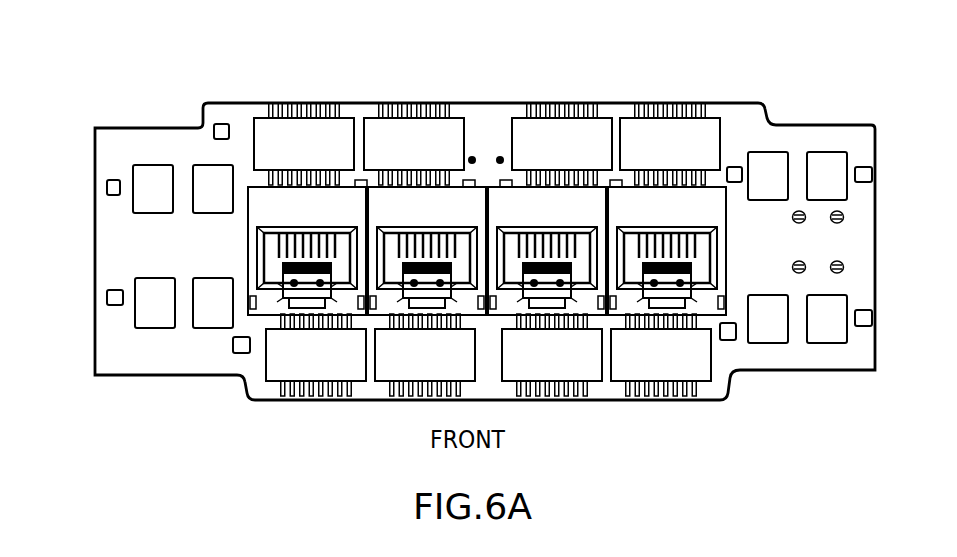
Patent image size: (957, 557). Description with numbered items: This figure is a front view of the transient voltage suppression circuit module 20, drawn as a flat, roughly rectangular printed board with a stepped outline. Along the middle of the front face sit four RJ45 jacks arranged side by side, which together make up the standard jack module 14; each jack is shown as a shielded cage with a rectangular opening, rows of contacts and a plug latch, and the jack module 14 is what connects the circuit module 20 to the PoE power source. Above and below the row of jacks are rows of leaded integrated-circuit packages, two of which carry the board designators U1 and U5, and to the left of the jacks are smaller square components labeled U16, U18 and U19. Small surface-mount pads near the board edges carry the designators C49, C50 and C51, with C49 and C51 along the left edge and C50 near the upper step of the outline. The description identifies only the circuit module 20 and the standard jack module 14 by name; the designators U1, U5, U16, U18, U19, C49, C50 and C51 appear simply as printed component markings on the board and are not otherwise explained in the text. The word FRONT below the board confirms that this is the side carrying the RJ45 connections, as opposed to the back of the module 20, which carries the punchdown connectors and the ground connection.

The transient voltage suppression circuit module 20 is at (95, 227).
The standard jack module 14 is at (672, 288).
The capacitor C49 is at (114, 180).
The capacitor C50 is at (222, 124).
The capacitor C51 is at (112, 305).
The integrated circuit U1 is at (304, 144).
The integrated circuit U5 is at (316, 355).
The integrated circuit U16 is at (153, 189).
The integrated circuit U18 is at (213, 189).
The integrated circuit U19 is at (155, 303).